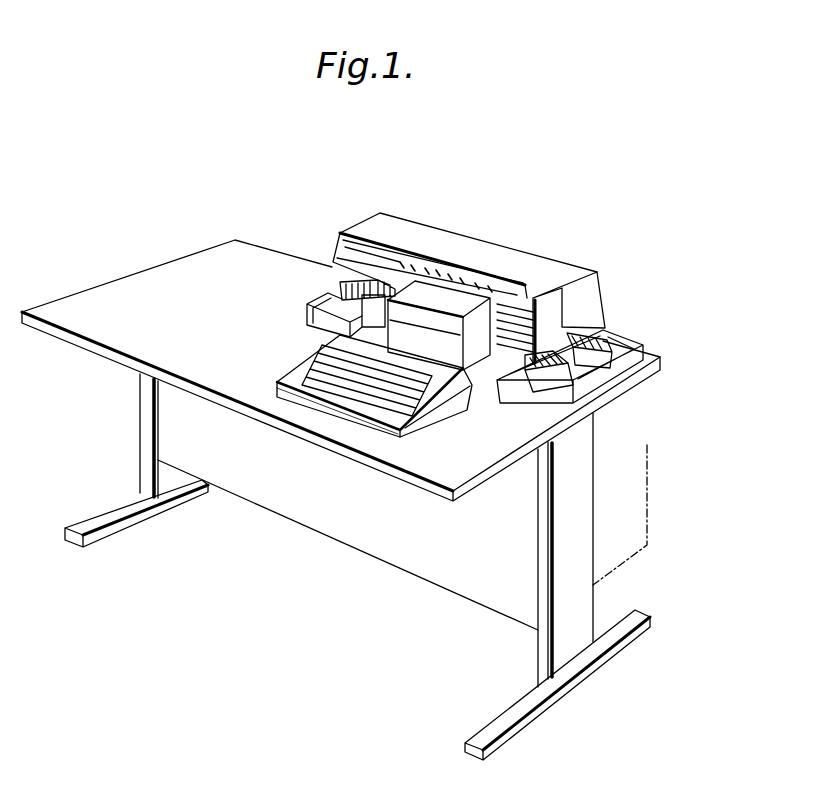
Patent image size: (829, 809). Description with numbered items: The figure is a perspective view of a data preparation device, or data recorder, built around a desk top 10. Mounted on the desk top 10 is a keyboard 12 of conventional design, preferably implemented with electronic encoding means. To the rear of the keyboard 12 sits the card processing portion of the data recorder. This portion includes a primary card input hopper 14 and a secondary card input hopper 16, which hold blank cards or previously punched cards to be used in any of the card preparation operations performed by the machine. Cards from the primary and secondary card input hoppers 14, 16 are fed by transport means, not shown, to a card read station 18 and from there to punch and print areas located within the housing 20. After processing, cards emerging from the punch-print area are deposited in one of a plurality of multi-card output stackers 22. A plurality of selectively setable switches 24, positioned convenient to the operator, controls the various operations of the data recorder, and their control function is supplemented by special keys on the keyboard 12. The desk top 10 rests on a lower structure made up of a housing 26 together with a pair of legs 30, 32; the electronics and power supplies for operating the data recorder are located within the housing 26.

The desk top 10 is at (460, 467).
The keyboard 12 is at (417, 432).
The primary card input hopper 14 is at (637, 357).
The secondary card input hopper 16 is at (540, 402).
The card read station 18 is at (533, 313).
The housing 20 is at (455, 300).
The multi-card output stackers 22 is at (365, 318).
The selectively setable switches 24 is at (462, 278).
The housing 26 is at (647, 505).
The leg 30 is at (578, 594).
The leg 32 is at (147, 454).